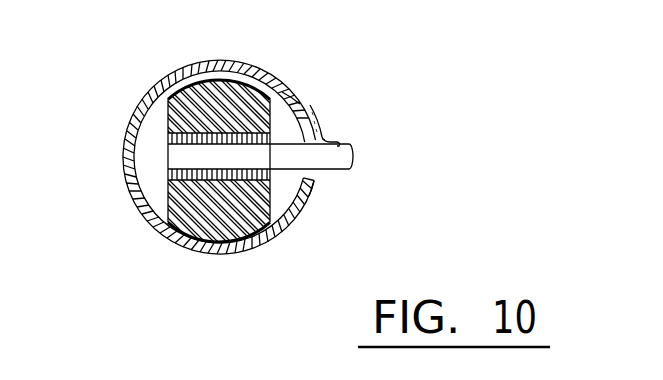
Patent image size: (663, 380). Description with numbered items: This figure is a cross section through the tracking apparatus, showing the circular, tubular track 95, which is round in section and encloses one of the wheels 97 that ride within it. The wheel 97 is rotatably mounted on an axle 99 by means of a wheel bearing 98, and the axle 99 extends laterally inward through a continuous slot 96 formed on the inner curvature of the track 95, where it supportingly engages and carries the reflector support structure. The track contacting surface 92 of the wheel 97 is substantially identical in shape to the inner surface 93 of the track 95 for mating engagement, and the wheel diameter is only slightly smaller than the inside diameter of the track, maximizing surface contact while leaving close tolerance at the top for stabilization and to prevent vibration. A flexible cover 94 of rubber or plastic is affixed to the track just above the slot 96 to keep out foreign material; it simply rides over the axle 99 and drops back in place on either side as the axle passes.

The track contacting surface 92 is at (207, 80).
The inner surface 93 is at (296, 112).
The flexible cover 94 is at (322, 114).
The track 95 is at (137, 207).
The slot 96 is at (320, 177).
The wheel 97 is at (197, 220).
The wheel bearing 98 is at (187, 133).
The axle 99 is at (335, 157).